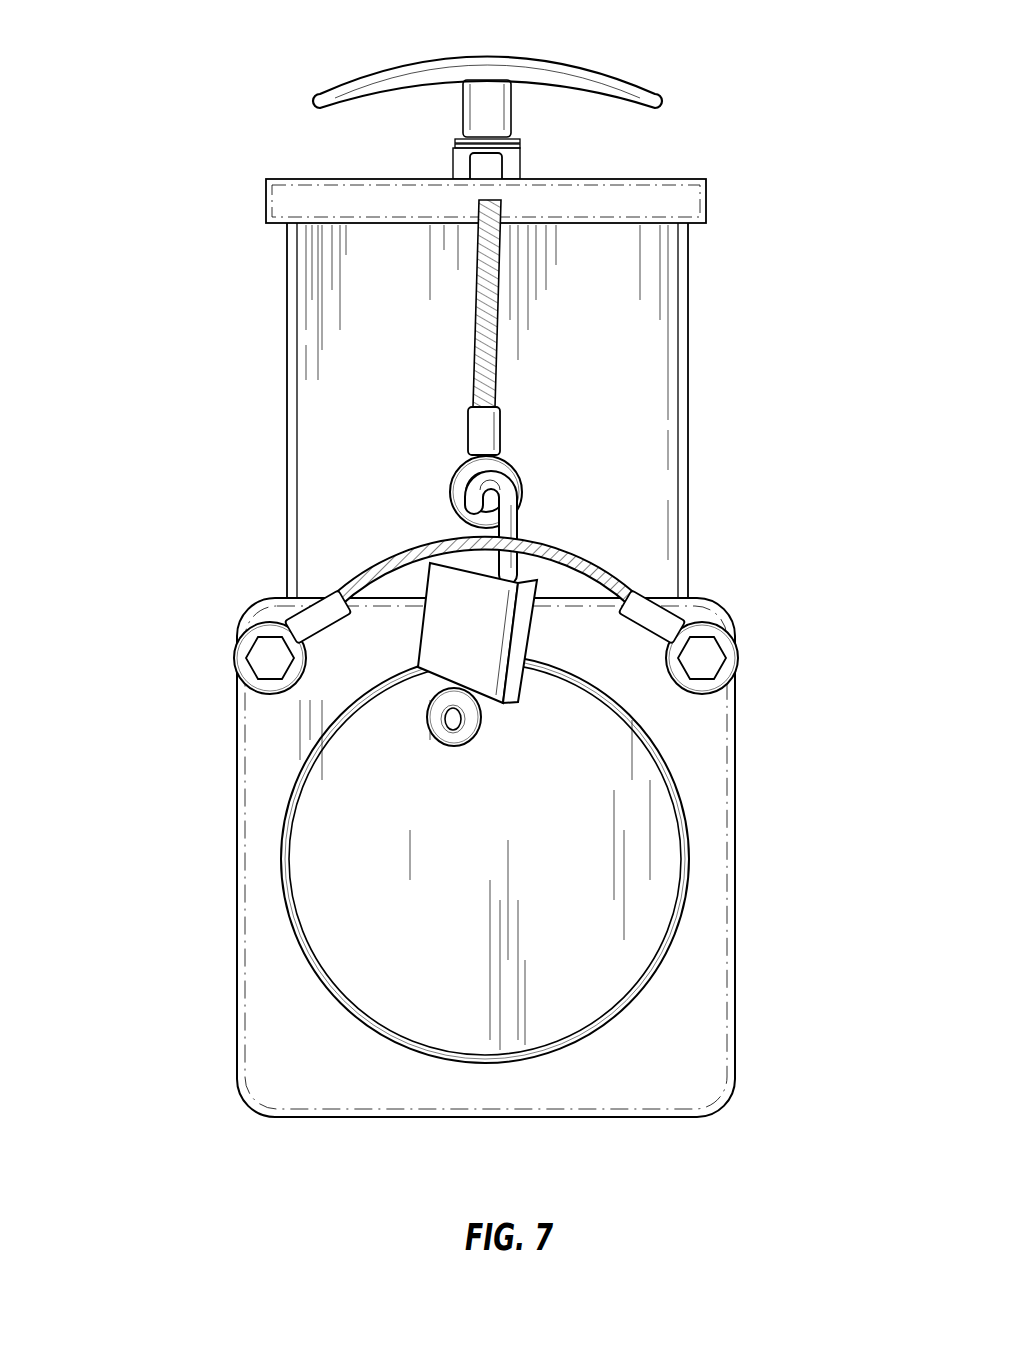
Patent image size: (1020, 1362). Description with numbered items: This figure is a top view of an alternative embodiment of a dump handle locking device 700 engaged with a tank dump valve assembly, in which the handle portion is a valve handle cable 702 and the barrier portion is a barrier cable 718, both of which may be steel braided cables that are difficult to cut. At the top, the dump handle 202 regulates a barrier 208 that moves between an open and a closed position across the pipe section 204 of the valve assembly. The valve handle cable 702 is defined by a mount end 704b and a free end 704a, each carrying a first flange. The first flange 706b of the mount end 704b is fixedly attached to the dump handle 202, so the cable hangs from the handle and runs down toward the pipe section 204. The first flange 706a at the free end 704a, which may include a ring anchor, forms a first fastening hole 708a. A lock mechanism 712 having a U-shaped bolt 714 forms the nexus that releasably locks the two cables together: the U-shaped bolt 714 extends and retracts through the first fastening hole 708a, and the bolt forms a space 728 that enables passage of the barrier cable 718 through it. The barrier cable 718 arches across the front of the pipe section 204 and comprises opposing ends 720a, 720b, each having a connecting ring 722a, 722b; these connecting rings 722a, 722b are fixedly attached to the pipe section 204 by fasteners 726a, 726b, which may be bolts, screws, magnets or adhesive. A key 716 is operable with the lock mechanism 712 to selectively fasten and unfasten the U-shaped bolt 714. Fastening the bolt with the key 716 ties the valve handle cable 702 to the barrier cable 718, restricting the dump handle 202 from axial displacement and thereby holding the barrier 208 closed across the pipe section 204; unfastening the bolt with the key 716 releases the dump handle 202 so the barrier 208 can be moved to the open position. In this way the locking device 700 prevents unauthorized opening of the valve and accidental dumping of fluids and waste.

The locking device 700 is at (172, 105).
The dump handle 202 is at (572, 64).
The first flange of the mount end 706b is at (456, 142).
The mount end 704b is at (494, 170).
The valve handle cable 702 is at (487, 310).
The barrier 208 is at (298, 376).
The free end 704a is at (492, 432).
The first flange of the free end 706a is at (466, 470).
The first fastening hole 708a is at (494, 480).
The space 728 is at (470, 532).
The U-shaped bolt 714 is at (516, 522).
The barrier cable 718 is at (395, 565).
The connecting ring 722a is at (248, 642).
The end of barrier cable 720a is at (237, 658).
The fastener 726a is at (265, 672).
The connecting ring 722b is at (735, 636).
The end of barrier cable 720b is at (712, 668).
The fastener 726b is at (712, 690).
The pipe section 204 is at (268, 743).
The lock mechanism 712 is at (527, 625).
The key 716 is at (452, 748).